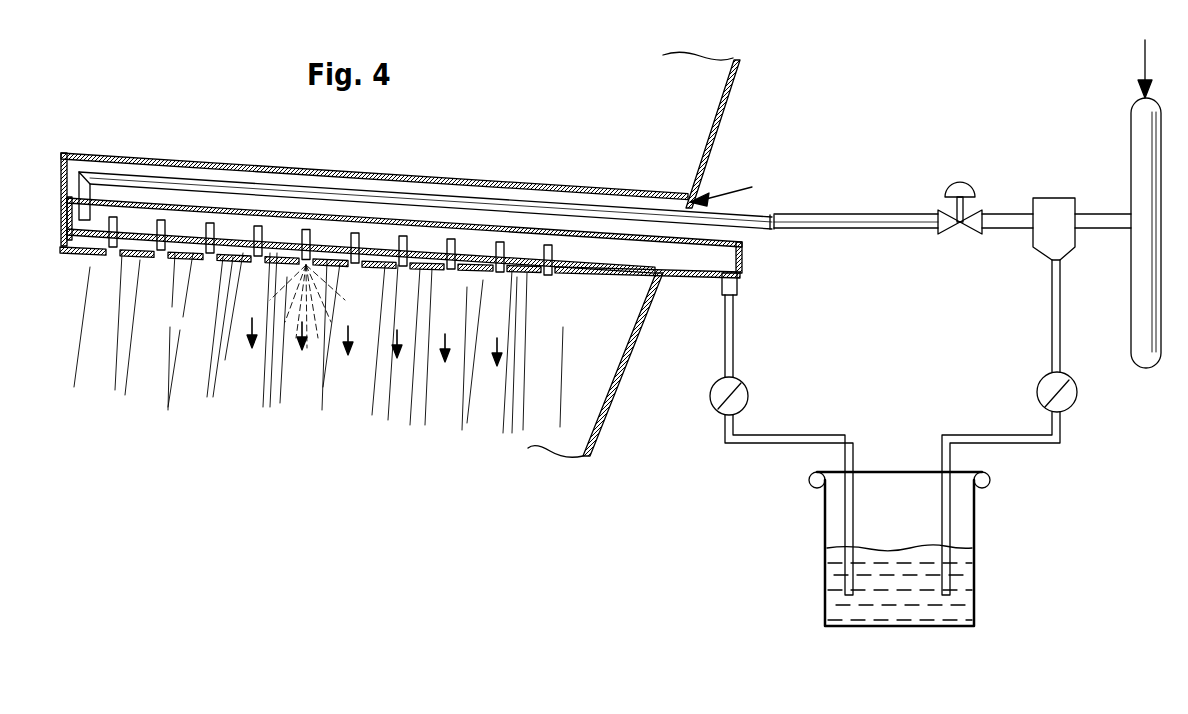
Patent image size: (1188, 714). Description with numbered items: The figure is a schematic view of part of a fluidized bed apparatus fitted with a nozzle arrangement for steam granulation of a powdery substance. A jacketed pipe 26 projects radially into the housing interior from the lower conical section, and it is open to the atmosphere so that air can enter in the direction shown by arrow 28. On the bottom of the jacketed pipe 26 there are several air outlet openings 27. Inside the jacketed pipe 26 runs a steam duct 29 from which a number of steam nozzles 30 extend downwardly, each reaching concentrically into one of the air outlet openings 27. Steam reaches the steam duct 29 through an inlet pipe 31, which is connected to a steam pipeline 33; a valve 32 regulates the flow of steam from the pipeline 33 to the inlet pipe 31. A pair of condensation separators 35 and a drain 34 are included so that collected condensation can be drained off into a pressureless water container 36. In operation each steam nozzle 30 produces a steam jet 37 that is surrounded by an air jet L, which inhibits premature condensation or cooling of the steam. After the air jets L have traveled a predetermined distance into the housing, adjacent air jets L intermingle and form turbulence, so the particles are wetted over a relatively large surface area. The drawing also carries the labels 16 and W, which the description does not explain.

The guide plate 16 is at (726, 130).
The jacketed pipe 26 is at (374, 159).
The air outlet openings 27 is at (401, 233).
The arrow 28 is at (724, 171).
The steam duct 29 is at (400, 290).
The steam nozzles 30 is at (355, 275).
The inlet pipe 31 is at (508, 183).
The valve 32 is at (974, 190).
The steam pipeline 33 is at (1118, 204).
The drain 34 is at (1056, 285).
The condensation separators 35 is at (897, 434).
The pressureless water container 36 is at (913, 549).
The steam jet 37 is at (362, 368).
The air jet L is at (318, 343).
The workpiece W is at (316, 441).